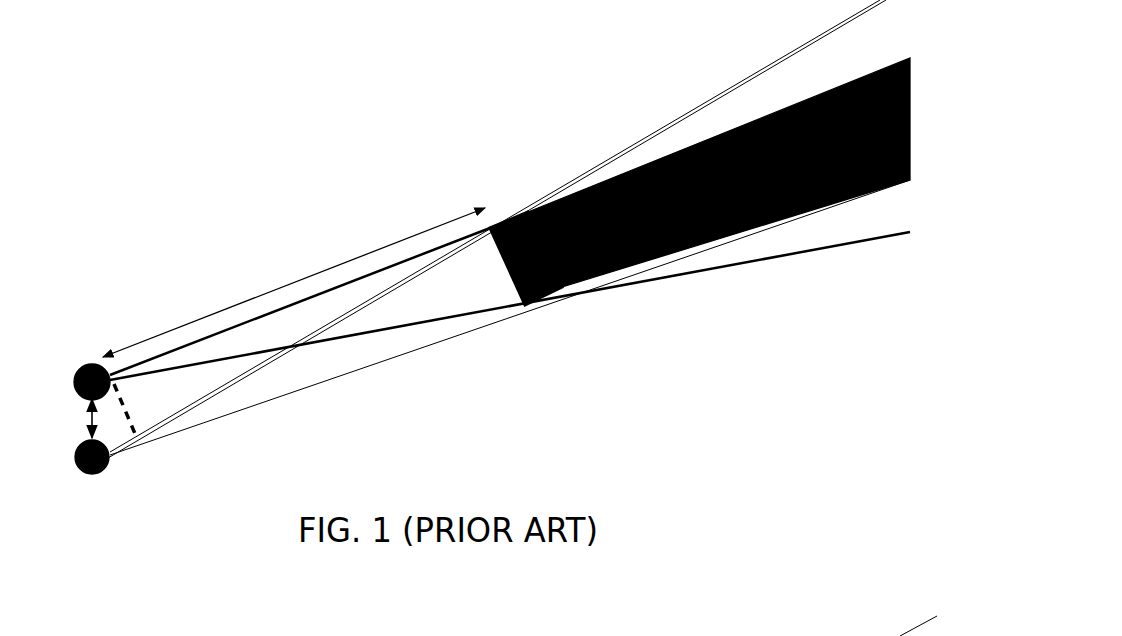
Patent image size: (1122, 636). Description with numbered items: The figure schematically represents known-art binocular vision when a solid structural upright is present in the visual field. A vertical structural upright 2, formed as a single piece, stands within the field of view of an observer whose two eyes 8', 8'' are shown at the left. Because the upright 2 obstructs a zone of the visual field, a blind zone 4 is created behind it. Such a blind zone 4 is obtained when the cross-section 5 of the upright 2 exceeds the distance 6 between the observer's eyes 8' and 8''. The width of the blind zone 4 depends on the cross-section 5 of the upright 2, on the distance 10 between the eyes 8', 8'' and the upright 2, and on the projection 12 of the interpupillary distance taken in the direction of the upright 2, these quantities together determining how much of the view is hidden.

The vertical structural upright 2 is at (503, 222).
The blind zone 4 is at (630, 200).
The cross-section 5 is at (527, 308).
The distance between the observer's eyes 6 is at (90, 416).
The observer's eye 8' is at (490, 314).
The observer's eye 8'' is at (492, 275).
The distance between the observer's eyes and the upright 10 is at (212, 315).
The projection of the interpupillary distance 12 is at (127, 406).